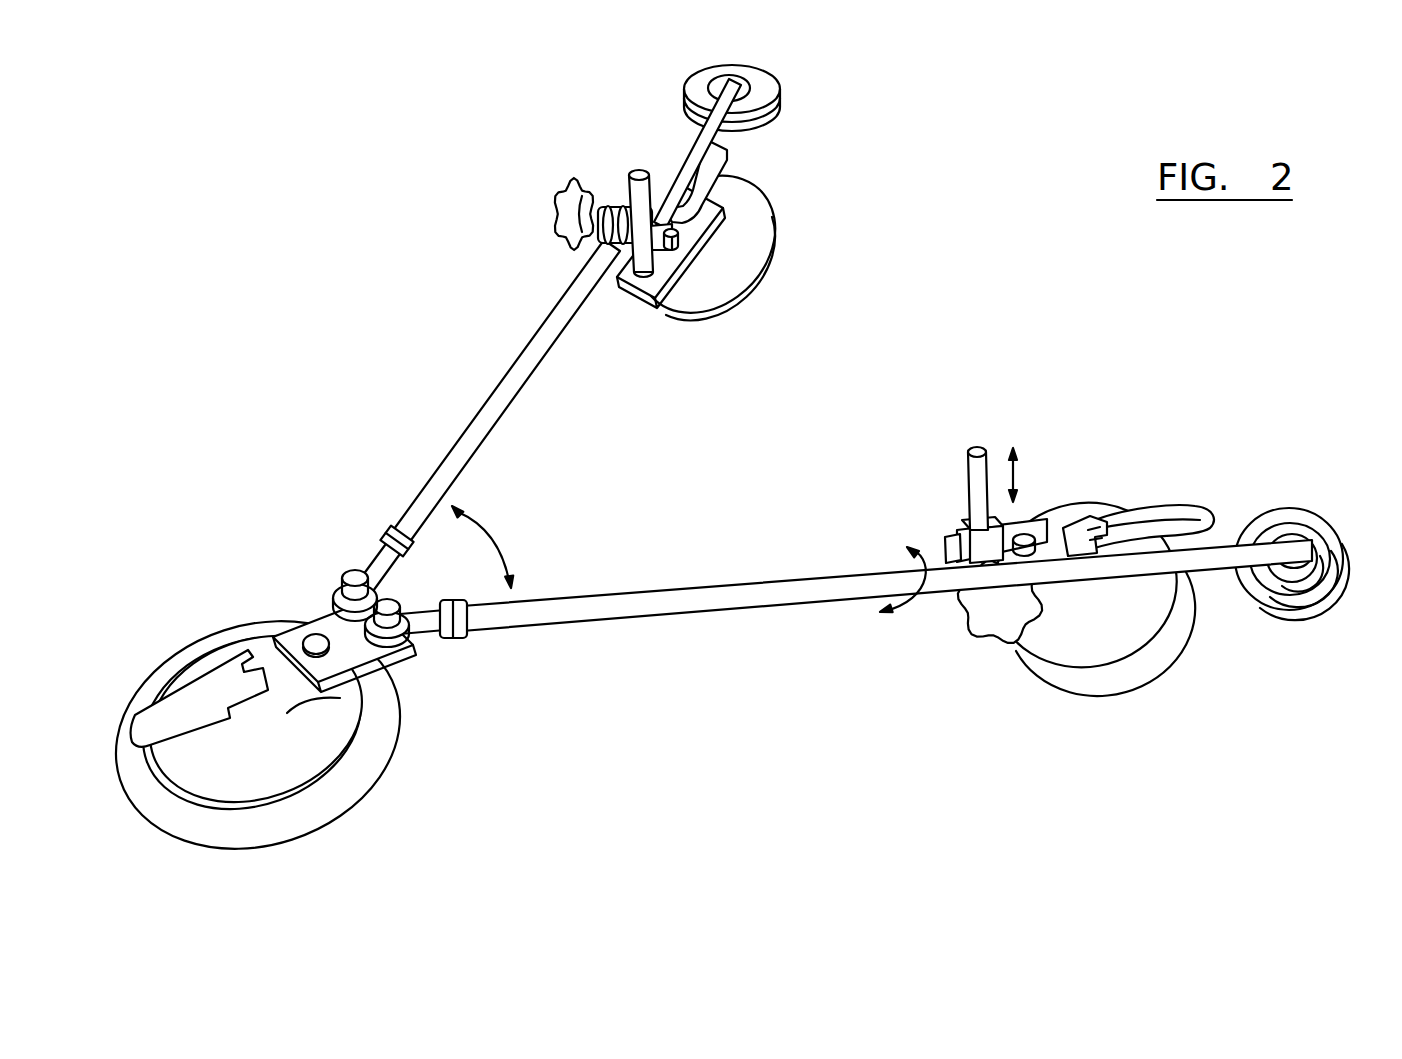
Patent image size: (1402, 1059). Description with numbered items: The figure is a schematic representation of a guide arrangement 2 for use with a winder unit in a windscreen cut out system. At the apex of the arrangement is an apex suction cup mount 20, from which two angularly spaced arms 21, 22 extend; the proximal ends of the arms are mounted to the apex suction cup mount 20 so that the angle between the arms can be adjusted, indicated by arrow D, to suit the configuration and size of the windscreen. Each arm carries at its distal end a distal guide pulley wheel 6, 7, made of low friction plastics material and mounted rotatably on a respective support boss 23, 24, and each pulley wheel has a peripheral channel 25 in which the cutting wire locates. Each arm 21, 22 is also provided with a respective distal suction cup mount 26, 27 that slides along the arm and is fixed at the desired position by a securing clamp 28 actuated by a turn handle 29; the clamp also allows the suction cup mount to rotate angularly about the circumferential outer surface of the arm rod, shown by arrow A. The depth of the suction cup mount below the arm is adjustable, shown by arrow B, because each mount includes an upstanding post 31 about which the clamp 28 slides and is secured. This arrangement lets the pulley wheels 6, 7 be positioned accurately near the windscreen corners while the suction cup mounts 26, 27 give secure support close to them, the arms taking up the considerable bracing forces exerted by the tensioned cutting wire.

The guide arrangement 2 is at (890, 320).
The distal guide pulley wheel 6 is at (767, 92).
The distal guide pulley wheel 7 is at (1295, 520).
The apex suction cup mount 20 is at (192, 628).
The arm 21 is at (478, 428).
The arm 22 is at (672, 600).
The support boss 23 is at (747, 84).
The support boss 24 is at (1295, 578).
The peripheral channel 25 is at (762, 123).
The distal suction cup mount 26 is at (782, 242).
The distal suction cup mount 27 is at (1112, 682).
The securing clamp 28 is at (609, 187).
The turn handle 29 is at (553, 215).
The upstanding post 31 is at (637, 170).